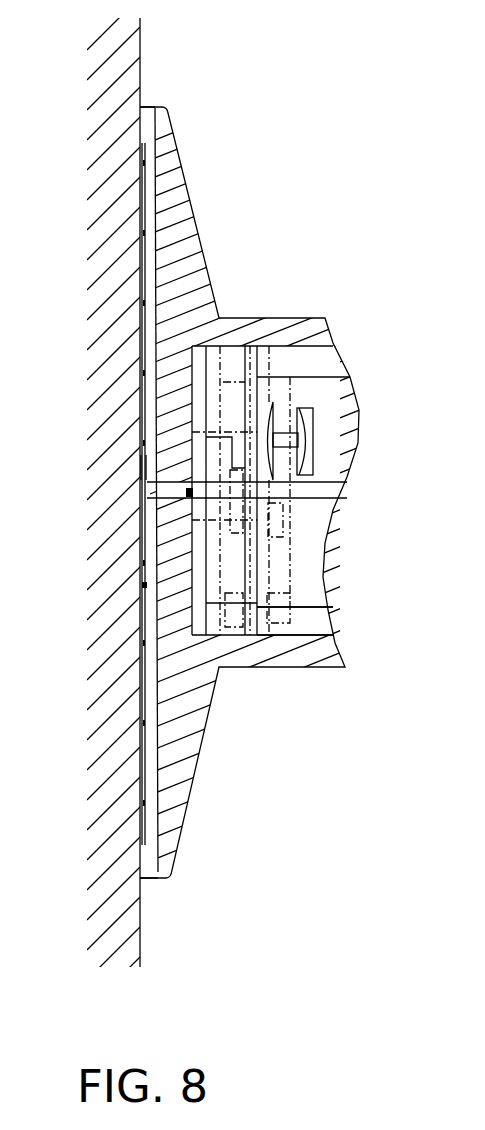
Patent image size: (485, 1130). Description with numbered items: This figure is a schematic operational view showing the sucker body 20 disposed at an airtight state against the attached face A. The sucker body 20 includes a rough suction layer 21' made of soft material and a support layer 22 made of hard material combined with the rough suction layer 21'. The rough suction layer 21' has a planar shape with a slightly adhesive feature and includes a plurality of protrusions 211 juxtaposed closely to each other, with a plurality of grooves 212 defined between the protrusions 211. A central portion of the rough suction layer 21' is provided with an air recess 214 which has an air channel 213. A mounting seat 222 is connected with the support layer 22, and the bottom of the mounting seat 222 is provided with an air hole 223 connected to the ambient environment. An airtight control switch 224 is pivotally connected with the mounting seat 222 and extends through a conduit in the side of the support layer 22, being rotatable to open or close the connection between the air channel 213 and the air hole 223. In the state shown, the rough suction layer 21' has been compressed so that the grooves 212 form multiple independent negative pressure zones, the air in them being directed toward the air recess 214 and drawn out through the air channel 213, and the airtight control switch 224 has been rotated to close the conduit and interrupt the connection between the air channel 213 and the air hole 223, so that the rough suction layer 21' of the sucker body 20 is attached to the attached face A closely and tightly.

The attached face A is at (128, 97).
The sucker body 20 is at (279, 467).
The rough suction layer 21' is at (188, 523).
The protrusions 211 is at (141, 200).
The grooves 212 is at (143, 277).
The air channel 213 is at (145, 508).
The air recess 214 is at (143, 466).
The support layer 22 is at (180, 763).
The mounting seat 222 is at (293, 552).
The air hole 223 is at (220, 500).
The airtight control switch 224 is at (275, 618).